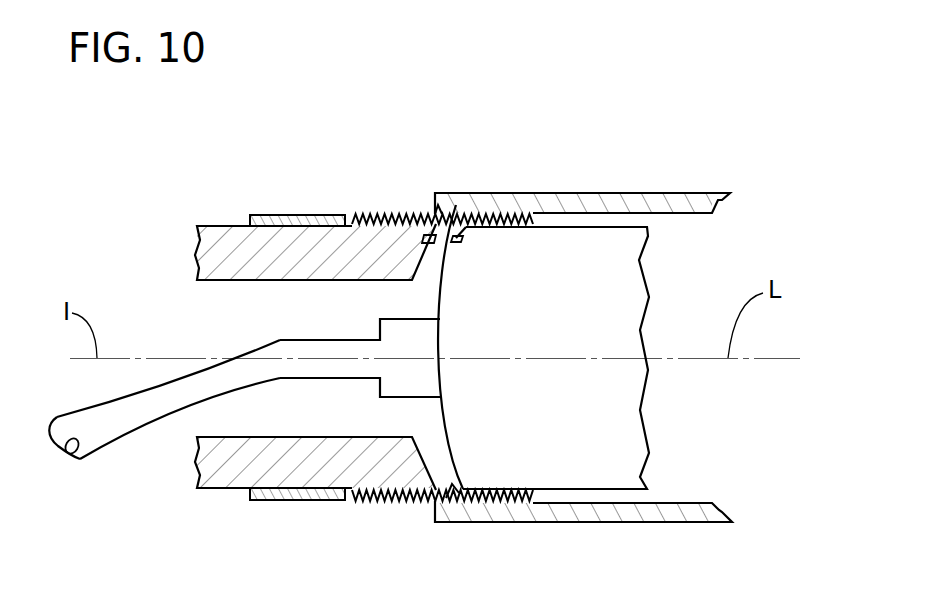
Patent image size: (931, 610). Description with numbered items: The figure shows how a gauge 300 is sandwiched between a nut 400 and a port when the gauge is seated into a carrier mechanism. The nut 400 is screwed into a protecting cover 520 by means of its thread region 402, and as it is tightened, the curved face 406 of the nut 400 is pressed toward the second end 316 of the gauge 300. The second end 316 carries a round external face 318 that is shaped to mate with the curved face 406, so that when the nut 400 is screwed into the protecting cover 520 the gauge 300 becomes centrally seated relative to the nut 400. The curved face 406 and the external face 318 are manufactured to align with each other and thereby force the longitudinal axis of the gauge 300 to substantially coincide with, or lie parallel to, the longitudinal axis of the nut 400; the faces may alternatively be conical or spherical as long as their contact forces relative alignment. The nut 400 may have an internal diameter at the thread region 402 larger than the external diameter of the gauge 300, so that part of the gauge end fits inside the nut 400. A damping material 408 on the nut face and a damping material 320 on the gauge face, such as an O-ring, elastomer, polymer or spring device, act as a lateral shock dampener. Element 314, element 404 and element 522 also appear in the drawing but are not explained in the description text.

The gauge 300 is at (573, 352).
The flexible tube 314 is at (125, 433).
The second end 316 is at (585, 242).
The external face 318 is at (447, 233).
The damping material 320 is at (461, 240).
The nut 400 is at (364, 311).
The thread region 402 is at (362, 193).
The ring 404 is at (291, 215).
The curved face 406 is at (420, 276).
The damping material 408 is at (436, 211).
The protecting cover 520 is at (687, 513).
The lower tooth 522 is at (452, 494).